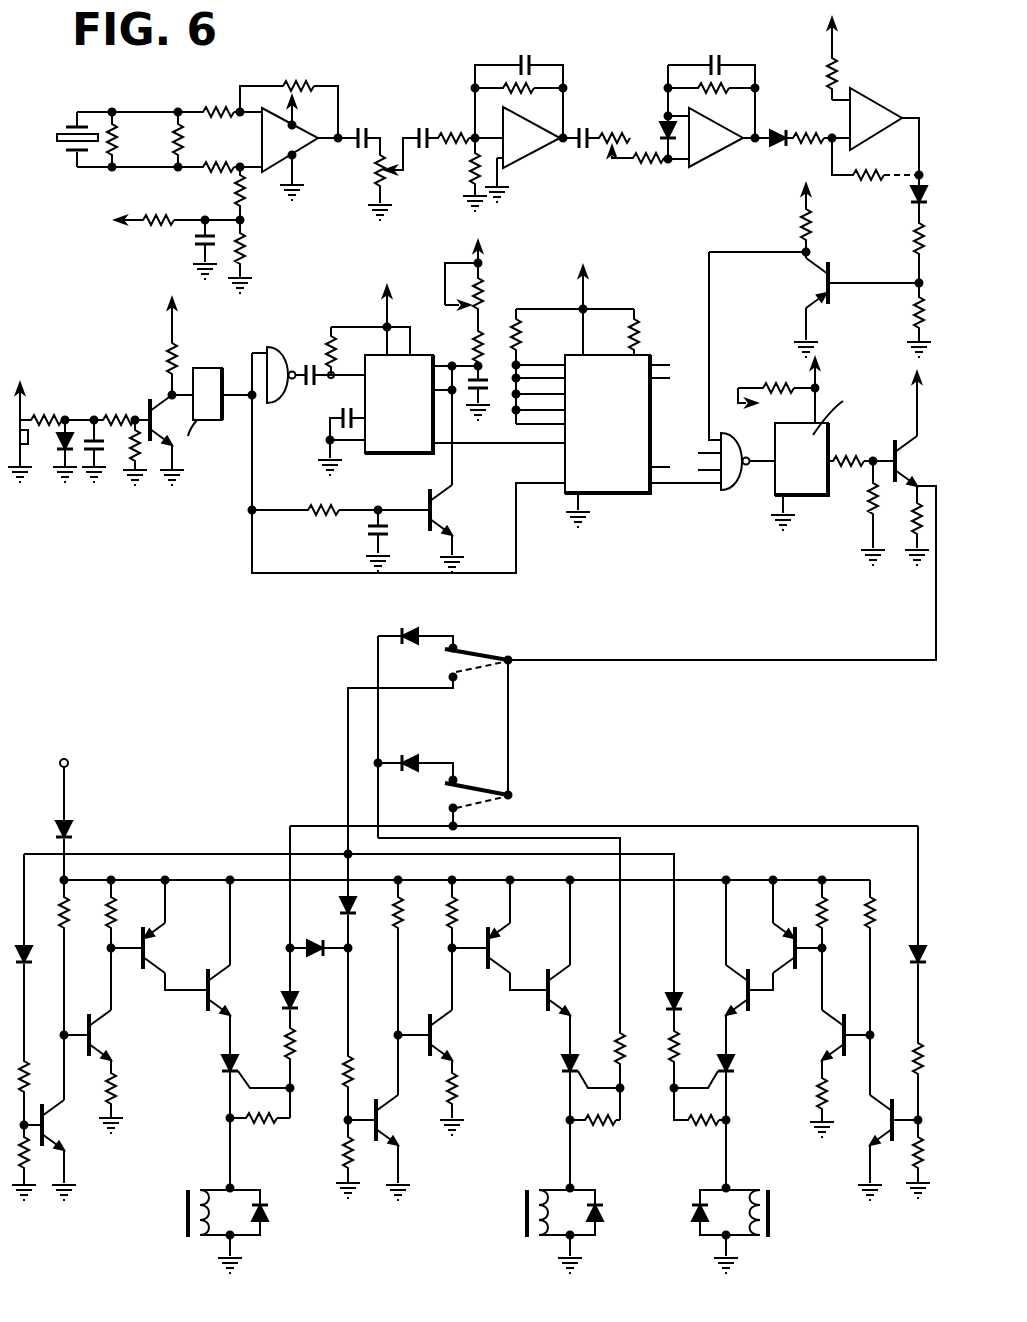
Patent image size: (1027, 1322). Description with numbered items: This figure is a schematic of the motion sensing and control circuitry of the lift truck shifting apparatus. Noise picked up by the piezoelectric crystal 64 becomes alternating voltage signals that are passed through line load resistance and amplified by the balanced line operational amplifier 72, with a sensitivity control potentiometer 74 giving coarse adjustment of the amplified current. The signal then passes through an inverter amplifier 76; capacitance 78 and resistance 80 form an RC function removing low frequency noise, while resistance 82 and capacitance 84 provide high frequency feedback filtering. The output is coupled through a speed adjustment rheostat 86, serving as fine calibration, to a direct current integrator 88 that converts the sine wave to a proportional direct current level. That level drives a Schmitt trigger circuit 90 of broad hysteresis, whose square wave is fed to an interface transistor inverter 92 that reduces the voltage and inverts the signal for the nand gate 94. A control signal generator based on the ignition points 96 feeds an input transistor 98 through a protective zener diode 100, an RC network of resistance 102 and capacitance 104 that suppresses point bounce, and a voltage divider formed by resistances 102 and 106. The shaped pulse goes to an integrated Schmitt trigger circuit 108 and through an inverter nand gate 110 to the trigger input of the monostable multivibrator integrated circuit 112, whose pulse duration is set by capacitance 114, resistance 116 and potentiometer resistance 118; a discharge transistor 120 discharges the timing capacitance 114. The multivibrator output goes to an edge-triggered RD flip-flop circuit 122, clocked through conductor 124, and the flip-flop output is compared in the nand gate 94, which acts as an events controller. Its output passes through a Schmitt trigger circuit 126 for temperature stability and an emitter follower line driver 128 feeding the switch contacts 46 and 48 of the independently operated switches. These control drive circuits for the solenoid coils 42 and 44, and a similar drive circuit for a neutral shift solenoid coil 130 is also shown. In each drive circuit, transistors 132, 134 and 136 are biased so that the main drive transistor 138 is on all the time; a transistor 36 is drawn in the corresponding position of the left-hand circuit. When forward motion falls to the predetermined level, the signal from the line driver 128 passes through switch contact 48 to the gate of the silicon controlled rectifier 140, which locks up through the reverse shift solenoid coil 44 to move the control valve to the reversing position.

The transistor 36 is at (143, 928).
The inductance coil 42 is at (758, 1239).
The reverse shift solenoid coil 44 is at (192, 1239).
The switch contact 46 is at (468, 656).
The switch contact 48 is at (460, 791).
The piezoelectric crystal 64 is at (64, 134).
The balanced line operational amplifier 72 is at (302, 147).
The sensitivity control potentiometer 74 is at (379, 182).
The inverter amplifier 76 is at (530, 157).
The capacitance 78 is at (420, 126).
The resistance 80 is at (462, 130).
The resistance 82 is at (522, 92).
The capacitance 84 is at (531, 62).
The speed adjustment rheostat 86 is at (617, 128).
The direct current integrator 88 is at (712, 152).
The Schmitt trigger circuit 90 is at (862, 115).
The interface transistor inverter 92 is at (834, 280).
The nand gate 94 is at (730, 488).
The ignition points 96 is at (30, 419).
The input transistor 98 is at (150, 403).
The protective zener diode 100 is at (80, 440).
The resistance 102 is at (118, 418).
The capacitance 104 is at (105, 450).
The resistance 106 is at (140, 450).
The integrated Schmitt trigger circuit 108 is at (207, 375).
The inverter nand gate 110 is at (278, 352).
The monostable multivibrator integrated circuit 112 is at (395, 448).
The capacitance 114 is at (484, 386).
The resistance 116 is at (470, 342).
The potentiometer resistance 118 is at (483, 307).
The discharge transistor 120 is at (429, 499).
The edge-triggered RD flip-flop circuit 122 is at (622, 493).
The conductor 124 is at (323, 573).
The Schmitt trigger circuit 126 is at (816, 497).
The emitter follower line driver 128 is at (893, 443).
The neutral shift solenoid coil 130 is at (531, 1239).
The transistor 132 is at (46, 1110).
The transistor 134 is at (88, 1023).
The transistor 136 is at (491, 928).
The main drive transistor 138 is at (208, 976).
The silicon controlled rectifier 140 is at (226, 1074).